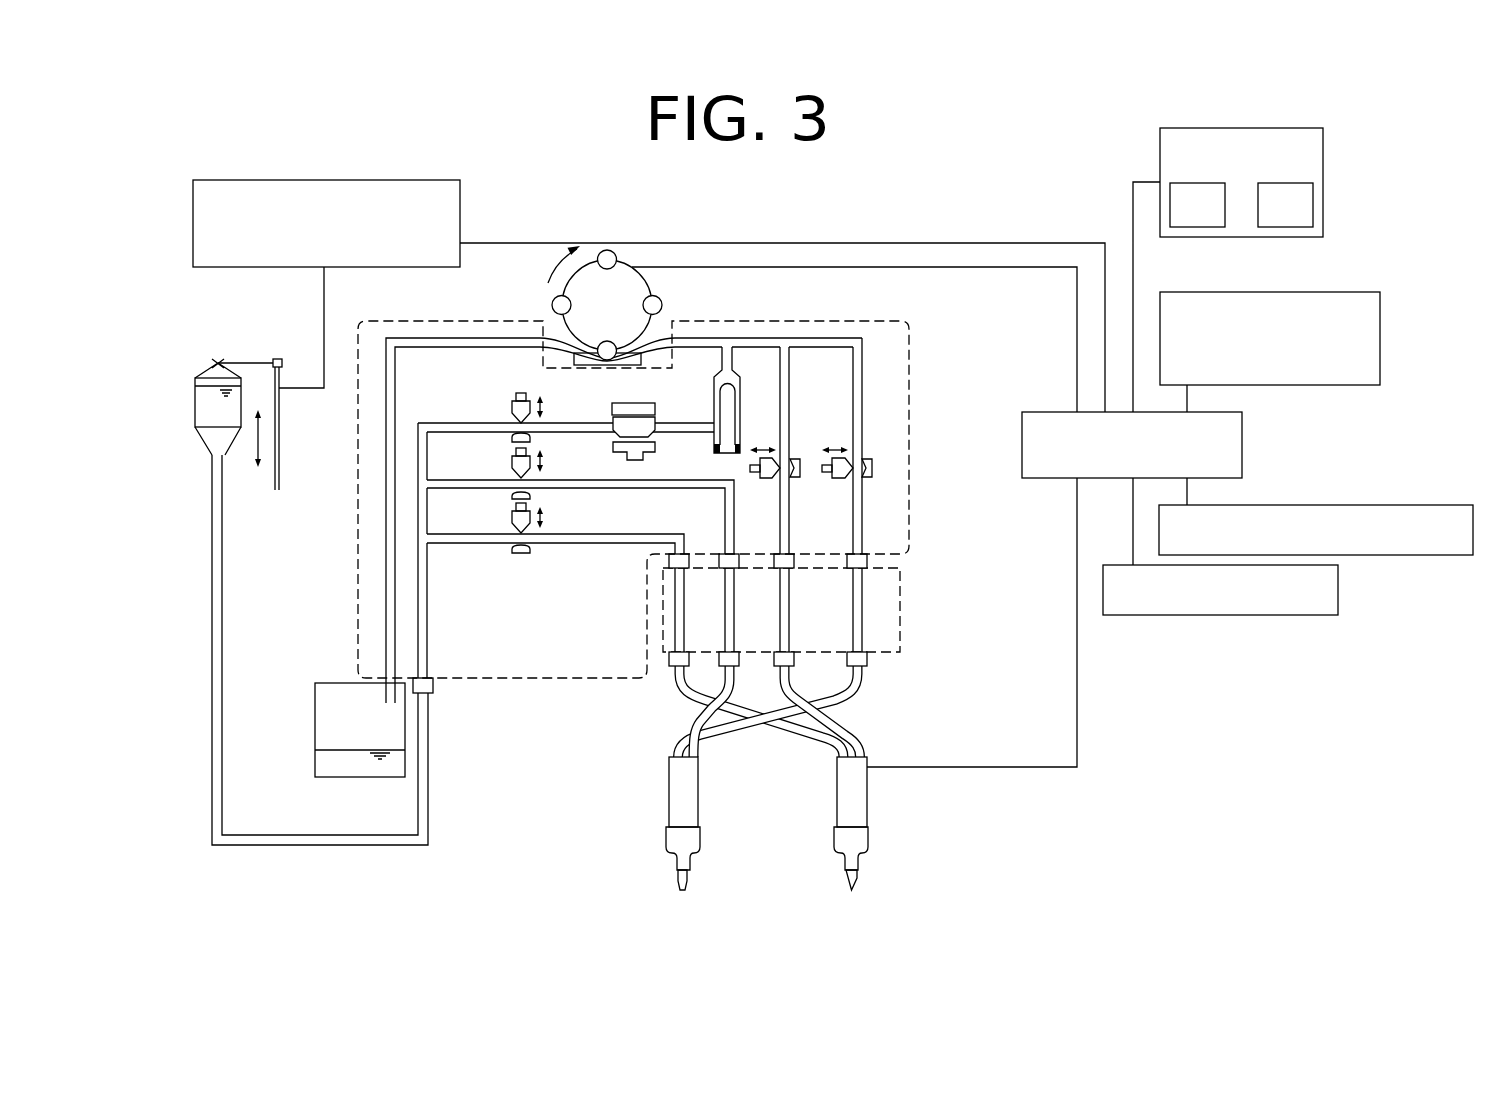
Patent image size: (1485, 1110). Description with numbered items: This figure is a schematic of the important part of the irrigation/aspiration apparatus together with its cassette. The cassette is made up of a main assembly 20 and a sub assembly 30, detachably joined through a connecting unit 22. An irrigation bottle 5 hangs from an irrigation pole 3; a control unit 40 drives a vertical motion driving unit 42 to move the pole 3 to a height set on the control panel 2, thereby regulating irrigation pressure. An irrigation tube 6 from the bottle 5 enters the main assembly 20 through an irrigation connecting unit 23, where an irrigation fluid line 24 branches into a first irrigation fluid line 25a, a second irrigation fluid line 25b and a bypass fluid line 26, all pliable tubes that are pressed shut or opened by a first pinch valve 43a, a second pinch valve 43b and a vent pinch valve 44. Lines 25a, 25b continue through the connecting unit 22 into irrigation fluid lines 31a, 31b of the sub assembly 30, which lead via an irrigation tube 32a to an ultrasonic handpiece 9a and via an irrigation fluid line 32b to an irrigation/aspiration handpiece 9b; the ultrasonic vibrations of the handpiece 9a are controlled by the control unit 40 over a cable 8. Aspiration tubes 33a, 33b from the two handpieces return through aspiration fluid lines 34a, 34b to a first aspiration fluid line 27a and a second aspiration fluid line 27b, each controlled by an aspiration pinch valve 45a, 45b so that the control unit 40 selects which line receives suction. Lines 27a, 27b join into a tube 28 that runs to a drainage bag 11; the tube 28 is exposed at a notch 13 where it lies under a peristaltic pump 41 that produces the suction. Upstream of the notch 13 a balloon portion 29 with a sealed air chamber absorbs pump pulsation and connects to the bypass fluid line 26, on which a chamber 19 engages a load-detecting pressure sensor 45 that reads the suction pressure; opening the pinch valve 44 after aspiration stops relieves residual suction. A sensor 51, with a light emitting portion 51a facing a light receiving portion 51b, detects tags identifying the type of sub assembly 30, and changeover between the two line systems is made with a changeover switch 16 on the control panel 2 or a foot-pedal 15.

The control panel 2 is at (1367, 374).
The irrigation pole 3 is at (276, 442).
The irrigation bottle 5 is at (209, 432).
The irrigation tube 6 is at (217, 742).
The cable 8 is at (1078, 697).
The ultrasonic handpiece 9a is at (850, 808).
The irrigation/aspiration handpiece 9b is at (680, 807).
The drainage bag 11 is at (342, 727).
The notch 13 is at (550, 318).
The foot-pedal 15 is at (1255, 608).
The changeover switch 16 is at (1462, 503).
The chamber 19 is at (633, 429).
The main assembly 20 is at (913, 342).
The connecting unit 22 is at (905, 562).
The irrigation connecting unit 23 is at (423, 686).
The irrigation fluid line 24 is at (418, 613).
The first irrigation fluid line 25a is at (623, 540).
The second irrigation fluid line 25b is at (622, 485).
The bypass fluid line 26 is at (546, 428).
The first aspiration fluid line 27a is at (783, 507).
The second aspiration fluid line 27b is at (857, 497).
The tube 28 is at (755, 342).
The balloon portion 29 is at (727, 403).
The sub assembly 30 is at (902, 608).
The irrigation fluid line 31a is at (680, 589).
The irrigation fluid line 31b is at (729, 604).
The irrigation tube 32a is at (813, 730).
The irrigation fluid line 32b is at (678, 736).
The aspiration tube 33a is at (847, 731).
The aspiration tube 33b is at (720, 721).
The aspiration fluid line 34a is at (784, 625).
The aspiration fluid line 34b is at (857, 630).
The control unit 40 is at (1246, 465).
The peristaltic pump 41 is at (628, 287).
The vertical motion driving unit 42 is at (220, 262).
The first pinch valve 43a is at (518, 520).
The second pinch valve 43b is at (518, 465).
The pinch valve 44 is at (518, 410).
The pressure sensor 45 is at (627, 410).
The first pinch valve 45a is at (773, 465).
The second pinch valve 45b is at (847, 465).
The sensor 51 is at (1313, 157).
The light emitting portion 51a is at (1195, 220).
The light receiving portion 51b is at (1304, 220).